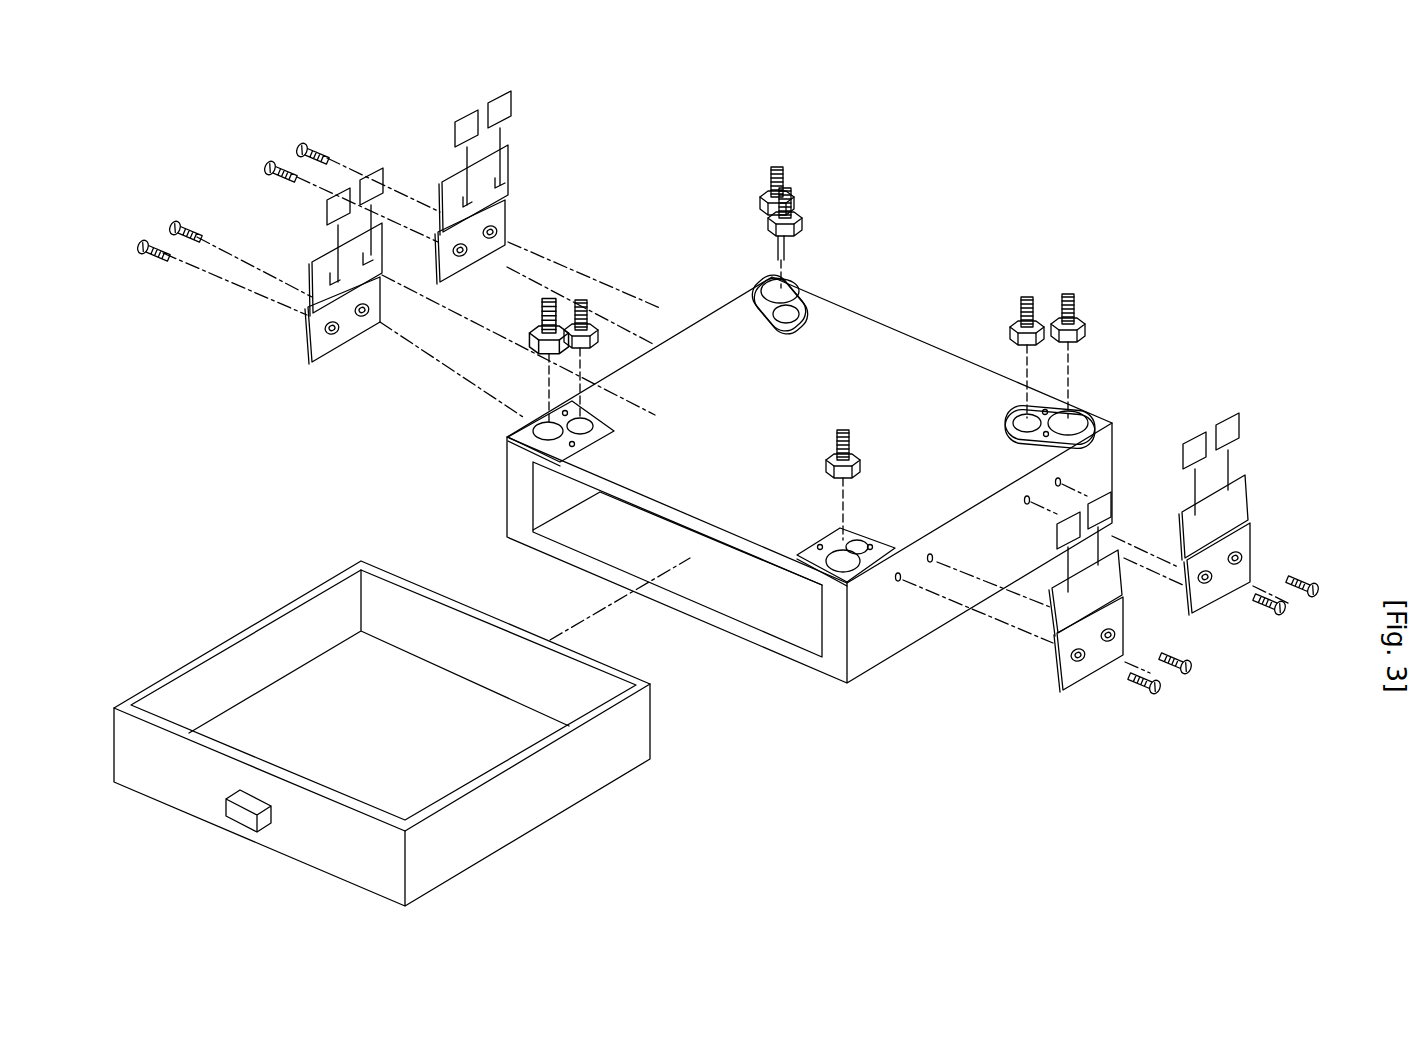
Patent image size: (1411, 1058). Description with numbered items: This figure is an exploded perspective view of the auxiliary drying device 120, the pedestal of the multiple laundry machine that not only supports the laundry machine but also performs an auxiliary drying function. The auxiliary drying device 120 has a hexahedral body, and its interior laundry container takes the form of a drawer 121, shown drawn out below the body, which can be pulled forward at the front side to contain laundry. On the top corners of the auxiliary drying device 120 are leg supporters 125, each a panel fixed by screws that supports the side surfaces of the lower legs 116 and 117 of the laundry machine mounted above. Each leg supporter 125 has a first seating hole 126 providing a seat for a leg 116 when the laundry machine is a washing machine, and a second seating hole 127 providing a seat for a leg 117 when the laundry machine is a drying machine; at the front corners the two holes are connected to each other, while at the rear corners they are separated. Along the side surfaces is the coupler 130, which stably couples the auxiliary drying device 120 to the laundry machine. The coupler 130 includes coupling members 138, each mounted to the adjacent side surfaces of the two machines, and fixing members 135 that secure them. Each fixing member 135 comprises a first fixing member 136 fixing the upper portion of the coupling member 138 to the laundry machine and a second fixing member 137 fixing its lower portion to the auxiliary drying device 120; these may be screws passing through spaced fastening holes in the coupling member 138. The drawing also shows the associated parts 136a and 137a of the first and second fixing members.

The lower leg 116 is at (543, 312).
The lower leg 117 is at (580, 303).
The auxiliary drying device 120 is at (868, 668).
The drawer 121 is at (284, 610).
The leg supporter 125 is at (613, 437).
The first seating hole 126 is at (523, 427).
The second seating hole 127 is at (590, 418).
The coupler 130 is at (415, 143).
The fixing member 135 is at (140, 138).
The first fixing member 136 is at (318, 215).
The tab 136a is at (372, 178).
The second fixing member 137 is at (257, 167).
The fixing screw 137a is at (307, 147).
The coupling member 138 is at (507, 193).